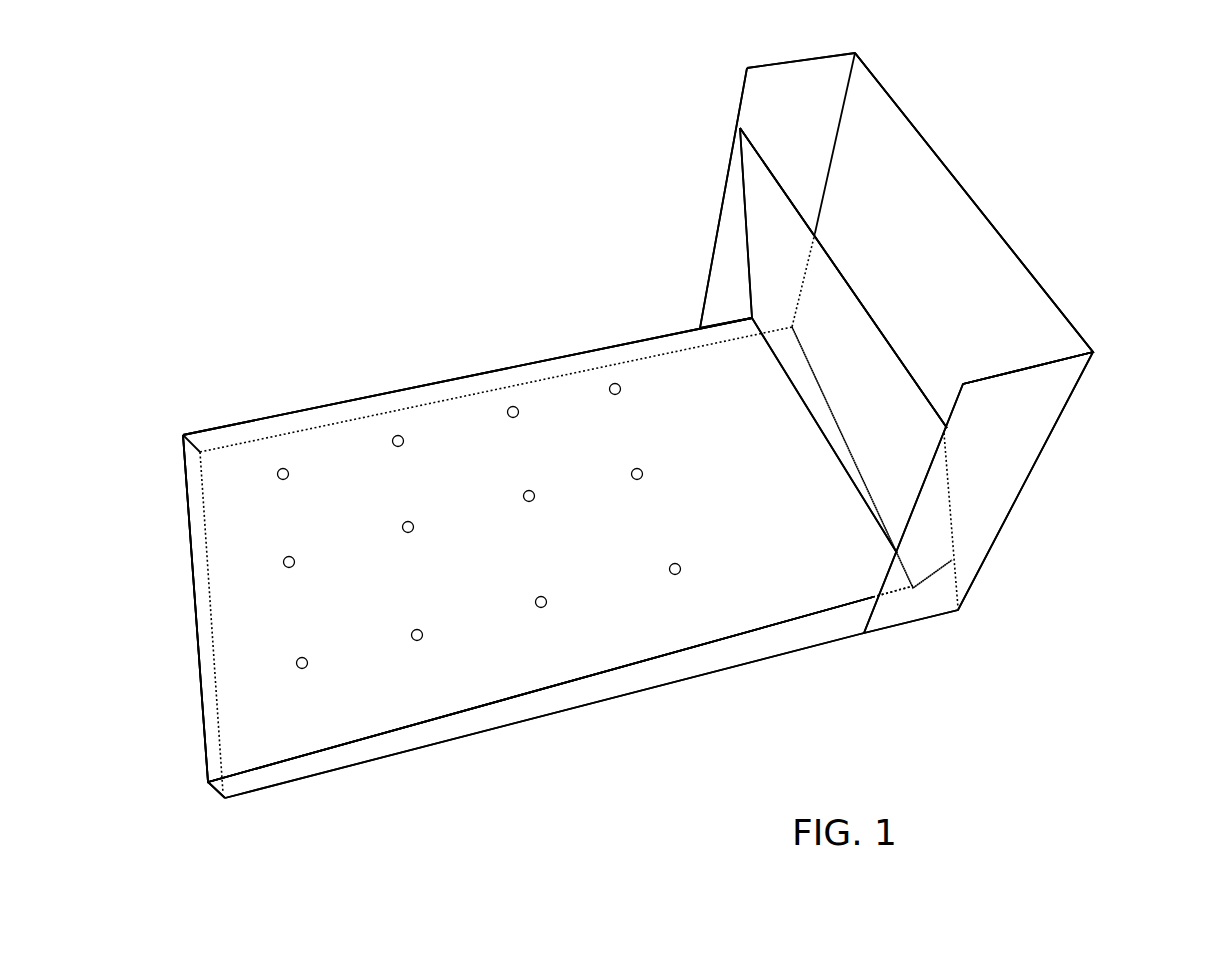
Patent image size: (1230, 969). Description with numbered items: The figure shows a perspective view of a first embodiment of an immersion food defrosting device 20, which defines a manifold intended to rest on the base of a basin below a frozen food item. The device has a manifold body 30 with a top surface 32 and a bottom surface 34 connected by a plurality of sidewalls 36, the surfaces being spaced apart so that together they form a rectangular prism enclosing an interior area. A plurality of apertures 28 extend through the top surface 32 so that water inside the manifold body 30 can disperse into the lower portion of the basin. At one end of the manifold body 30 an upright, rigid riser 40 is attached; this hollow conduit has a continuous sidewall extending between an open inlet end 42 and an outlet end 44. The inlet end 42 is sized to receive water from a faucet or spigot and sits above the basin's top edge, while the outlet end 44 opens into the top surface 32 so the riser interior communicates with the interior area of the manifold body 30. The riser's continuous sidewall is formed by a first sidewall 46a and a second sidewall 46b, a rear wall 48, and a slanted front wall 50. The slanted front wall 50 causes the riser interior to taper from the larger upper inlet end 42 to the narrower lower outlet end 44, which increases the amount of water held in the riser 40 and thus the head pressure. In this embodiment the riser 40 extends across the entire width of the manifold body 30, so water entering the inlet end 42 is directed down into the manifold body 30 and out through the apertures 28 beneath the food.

The defrosting device 20 is at (528, 216).
The apertures 28 is at (667, 570).
The manifold body 30 is at (644, 681).
The top surface 32 is at (388, 733).
The bottom surface 34 is at (337, 770).
The sidewalls 36 is at (242, 432).
The riser 40 is at (1047, 470).
The inlet end 42 is at (932, 210).
The outlet end 44 is at (943, 572).
The first sidewall 46a is at (972, 442).
The second sidewall 46b is at (772, 118).
The rear wall 48 is at (950, 287).
The slanted front wall 50 is at (847, 285).